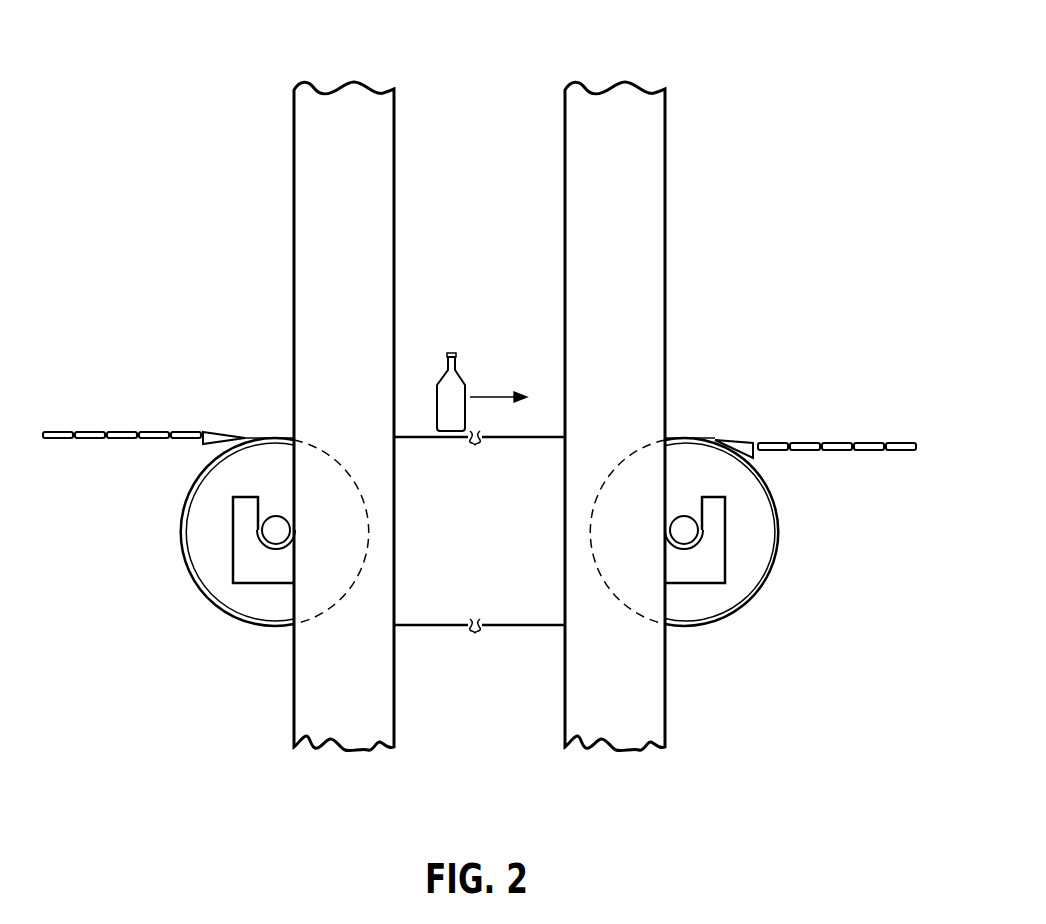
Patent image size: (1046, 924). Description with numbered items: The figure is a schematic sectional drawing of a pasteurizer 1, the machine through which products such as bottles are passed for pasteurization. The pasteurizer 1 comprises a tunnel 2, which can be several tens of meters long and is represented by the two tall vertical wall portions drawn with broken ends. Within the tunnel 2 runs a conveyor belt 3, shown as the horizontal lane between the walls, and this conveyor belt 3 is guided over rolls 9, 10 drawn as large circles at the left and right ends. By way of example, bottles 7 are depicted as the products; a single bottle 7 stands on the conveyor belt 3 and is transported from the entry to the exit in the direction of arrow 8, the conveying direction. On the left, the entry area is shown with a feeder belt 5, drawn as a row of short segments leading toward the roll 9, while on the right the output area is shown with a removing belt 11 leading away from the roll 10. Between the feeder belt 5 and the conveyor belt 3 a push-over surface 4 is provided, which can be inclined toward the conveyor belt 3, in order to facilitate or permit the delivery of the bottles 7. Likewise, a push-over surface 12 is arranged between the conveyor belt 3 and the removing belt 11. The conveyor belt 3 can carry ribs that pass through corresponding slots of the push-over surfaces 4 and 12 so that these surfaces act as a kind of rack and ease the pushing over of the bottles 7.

The pasteurizer 1 is at (244, 70).
The tunnel 2 is at (481, 263).
The conveyor belt 3 is at (416, 436).
The push-over surface 4 is at (207, 445).
The feeder belt 5 is at (115, 439).
The bottles 7 is at (460, 386).
The arrow 8 is at (497, 397).
The roll 9 is at (210, 545).
The roll 10 is at (765, 545).
The removing belt 11 is at (845, 452).
The push-over surface 12 is at (748, 452).